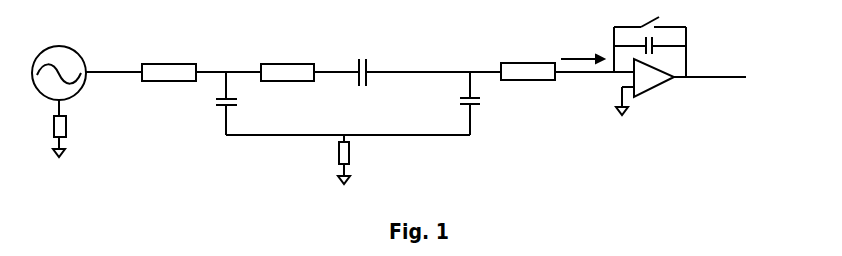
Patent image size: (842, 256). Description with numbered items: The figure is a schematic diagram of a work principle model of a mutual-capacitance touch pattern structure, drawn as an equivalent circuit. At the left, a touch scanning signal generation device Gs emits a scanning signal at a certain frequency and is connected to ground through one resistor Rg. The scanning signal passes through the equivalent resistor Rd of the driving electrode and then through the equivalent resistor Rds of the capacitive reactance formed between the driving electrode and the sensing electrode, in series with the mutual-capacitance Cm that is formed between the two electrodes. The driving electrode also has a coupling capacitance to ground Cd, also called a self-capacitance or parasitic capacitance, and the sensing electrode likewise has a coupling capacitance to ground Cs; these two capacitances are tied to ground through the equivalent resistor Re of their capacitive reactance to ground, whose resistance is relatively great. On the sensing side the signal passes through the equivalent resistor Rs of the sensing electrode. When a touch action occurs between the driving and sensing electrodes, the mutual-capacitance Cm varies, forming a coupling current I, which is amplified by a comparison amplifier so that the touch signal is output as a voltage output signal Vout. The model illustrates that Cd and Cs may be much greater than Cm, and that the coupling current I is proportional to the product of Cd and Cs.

The touch scanning signal generation device Gs is at (59, 61).
The resistor to ground Rg is at (78, 128).
The equivalent resistor of the driving electrode Rd is at (169, 58).
The coupling capacitance to ground of the driving electrode Cd is at (207, 103).
The equivalent resistor of the capacitive reactance Rds is at (287, 58).
The mutual-capacitance Cm is at (362, 59).
The coupling capacitance to ground of the sensing electrode Cs is at (486, 103).
The equivalent resistor of the capacitive reactance to ground Re is at (327, 159).
The equivalent resistor of the sensing electrode Rs is at (528, 60).
The coupling current I is at (582, 47).
The voltage output signal Vout is at (710, 93).